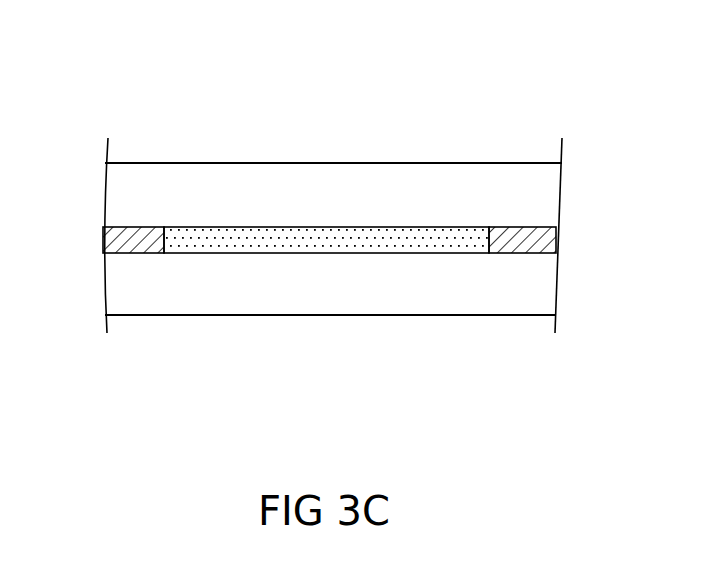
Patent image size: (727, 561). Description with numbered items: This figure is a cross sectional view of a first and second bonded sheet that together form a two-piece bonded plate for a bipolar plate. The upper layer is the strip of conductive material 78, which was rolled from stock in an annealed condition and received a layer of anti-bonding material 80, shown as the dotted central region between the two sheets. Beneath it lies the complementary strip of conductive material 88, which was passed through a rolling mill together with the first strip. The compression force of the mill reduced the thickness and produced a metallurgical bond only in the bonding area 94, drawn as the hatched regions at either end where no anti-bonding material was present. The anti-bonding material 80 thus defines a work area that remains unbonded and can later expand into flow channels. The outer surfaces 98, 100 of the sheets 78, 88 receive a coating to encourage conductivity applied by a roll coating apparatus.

The strip of conductive material 78 is at (294, 168).
The anti-bonding material 80 is at (370, 233).
The complementary strip of conductive material 88 is at (293, 313).
The bonding area 94 is at (518, 234).
The outer surface 98 is at (333, 105).
The outer surface 100 is at (330, 375).